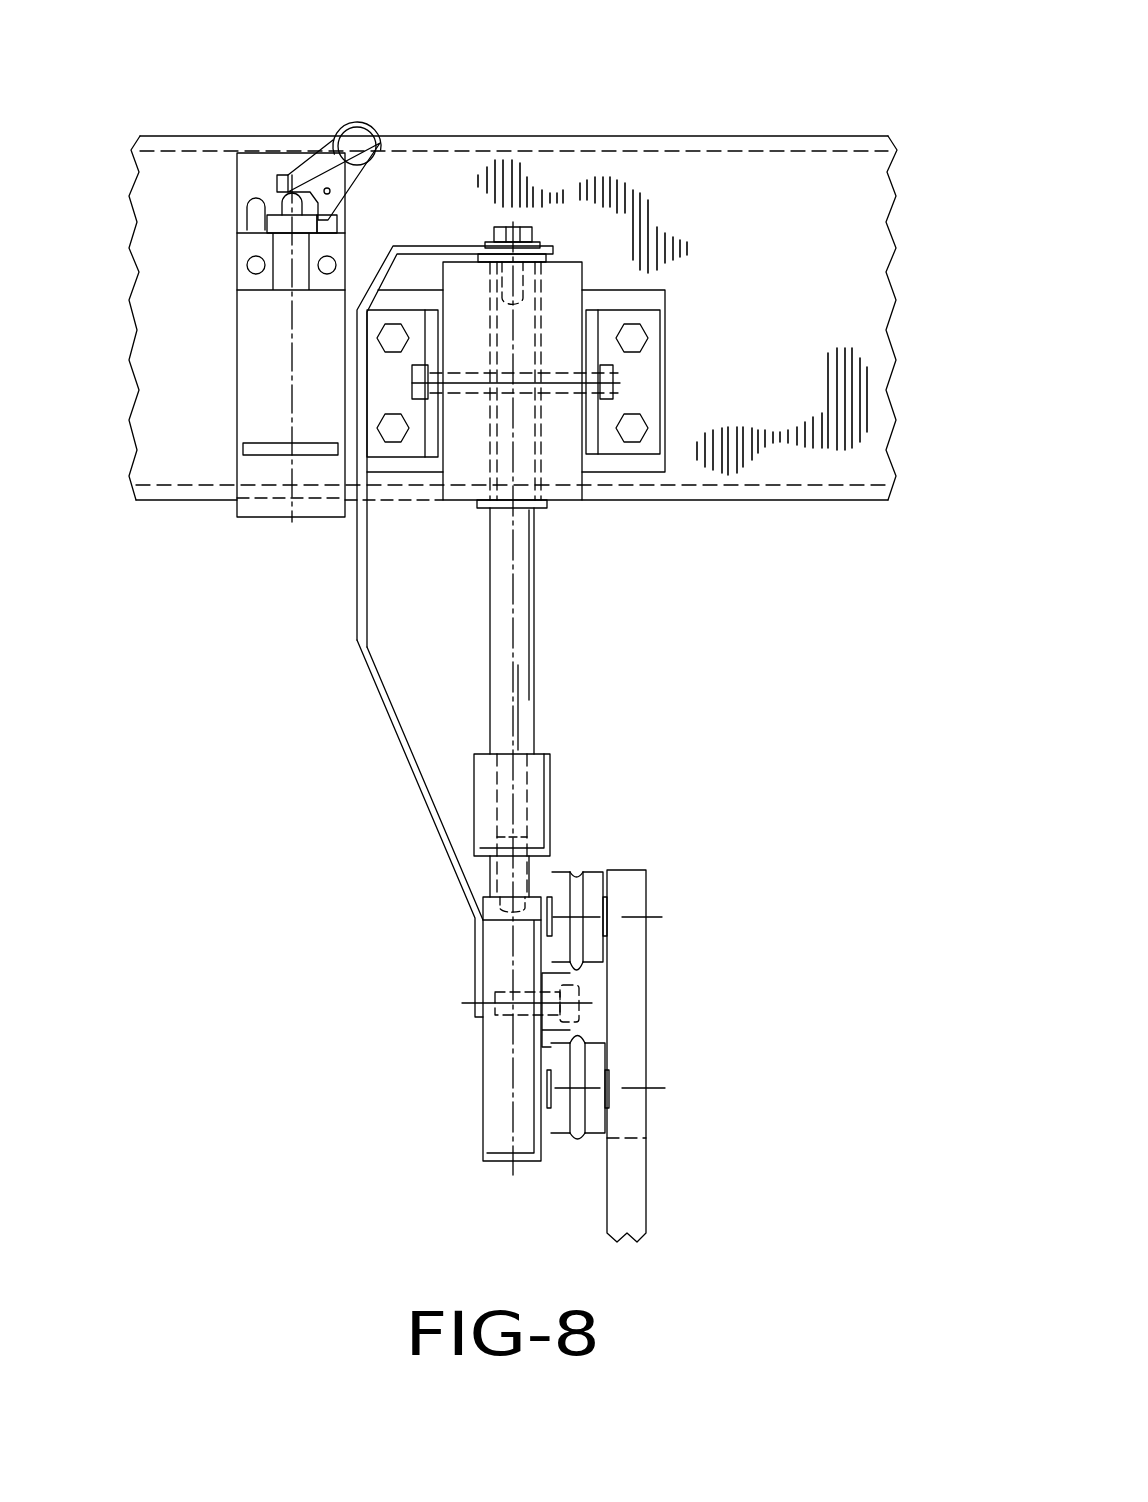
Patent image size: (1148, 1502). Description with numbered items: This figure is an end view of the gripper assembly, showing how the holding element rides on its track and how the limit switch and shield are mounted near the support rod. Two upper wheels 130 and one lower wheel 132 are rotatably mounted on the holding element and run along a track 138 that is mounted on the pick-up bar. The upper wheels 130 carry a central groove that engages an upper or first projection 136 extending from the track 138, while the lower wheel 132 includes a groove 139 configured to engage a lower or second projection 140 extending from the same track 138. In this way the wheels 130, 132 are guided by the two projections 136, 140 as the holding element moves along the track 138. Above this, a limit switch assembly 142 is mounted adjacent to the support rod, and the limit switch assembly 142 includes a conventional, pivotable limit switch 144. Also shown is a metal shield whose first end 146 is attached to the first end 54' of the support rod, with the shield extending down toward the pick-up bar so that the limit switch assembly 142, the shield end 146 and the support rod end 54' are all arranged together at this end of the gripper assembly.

The limit switch assembly 142 is at (221, 108).
The pivotable limit switch 144 is at (378, 134).
The first end of the support rod 54' is at (512, 620).
The first end of the metal shield 146 is at (550, 250).
The upper wheels 130 is at (593, 882).
The lower wheel 132 is at (596, 1122).
The upper or first projection 136 is at (578, 960).
The lower or second projection 140 is at (578, 1042).
The track 138 is at (572, 1004).
The groove 139 is at (577, 1140).